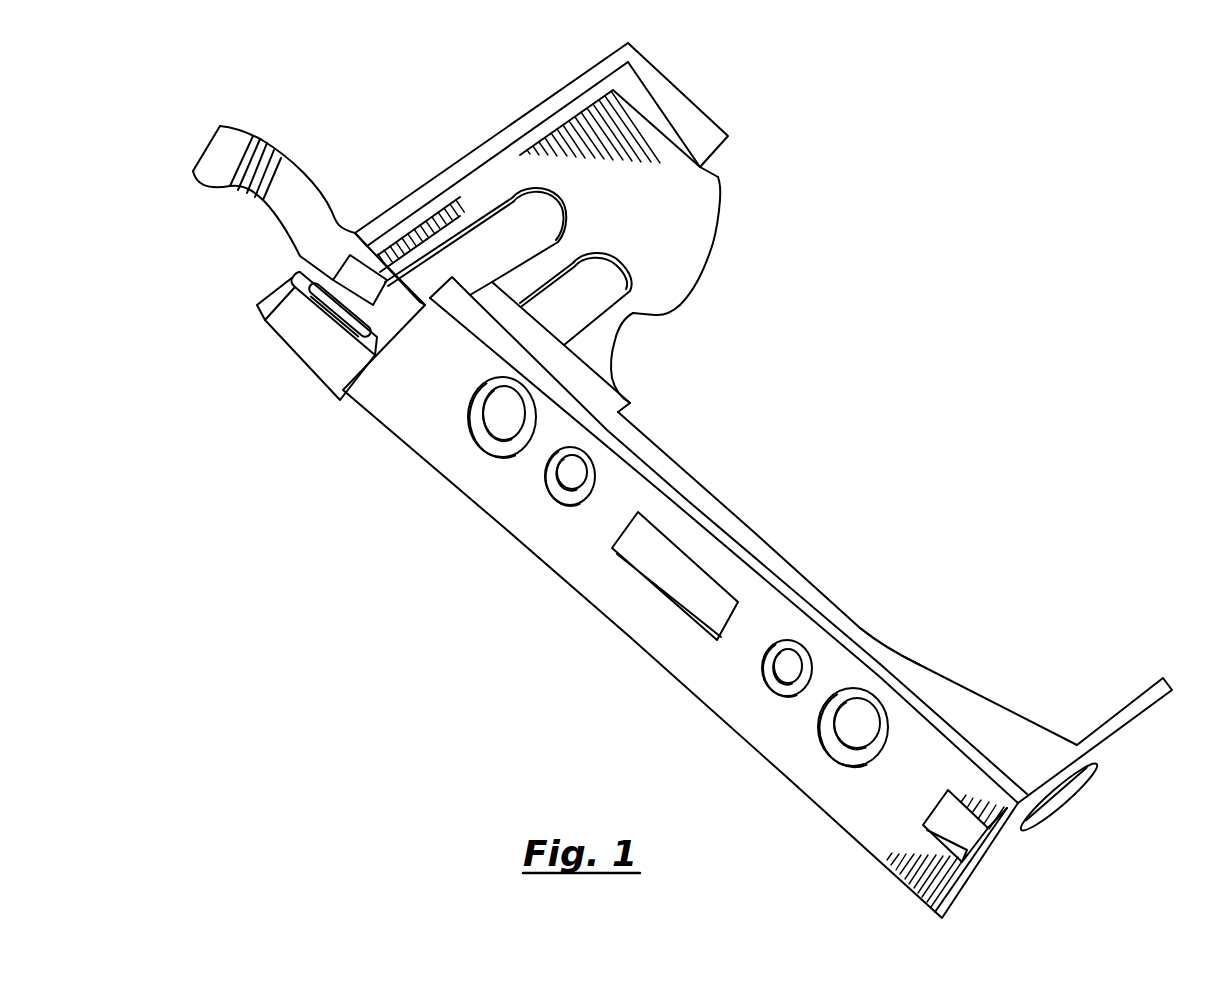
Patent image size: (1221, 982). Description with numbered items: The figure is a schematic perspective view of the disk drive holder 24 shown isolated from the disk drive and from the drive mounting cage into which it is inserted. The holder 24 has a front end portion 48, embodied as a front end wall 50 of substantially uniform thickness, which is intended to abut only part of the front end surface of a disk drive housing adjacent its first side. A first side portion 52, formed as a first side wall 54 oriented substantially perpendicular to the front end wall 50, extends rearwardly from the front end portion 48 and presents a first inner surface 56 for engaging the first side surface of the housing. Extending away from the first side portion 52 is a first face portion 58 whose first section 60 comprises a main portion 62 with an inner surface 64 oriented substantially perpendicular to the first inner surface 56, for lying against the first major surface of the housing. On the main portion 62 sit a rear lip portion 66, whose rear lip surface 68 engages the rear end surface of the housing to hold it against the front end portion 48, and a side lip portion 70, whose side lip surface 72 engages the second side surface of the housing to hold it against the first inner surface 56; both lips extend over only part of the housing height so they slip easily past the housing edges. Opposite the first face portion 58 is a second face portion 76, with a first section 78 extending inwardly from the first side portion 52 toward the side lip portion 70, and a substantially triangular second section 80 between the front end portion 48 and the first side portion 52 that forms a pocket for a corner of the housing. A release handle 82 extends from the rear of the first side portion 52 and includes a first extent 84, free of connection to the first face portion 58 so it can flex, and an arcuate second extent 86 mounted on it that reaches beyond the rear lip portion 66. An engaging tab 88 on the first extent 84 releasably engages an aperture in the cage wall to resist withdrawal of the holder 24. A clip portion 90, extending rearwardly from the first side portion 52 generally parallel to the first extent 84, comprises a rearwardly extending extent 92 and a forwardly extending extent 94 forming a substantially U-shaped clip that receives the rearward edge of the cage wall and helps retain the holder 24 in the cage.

The disk drive holder 24 is at (492, 578).
The front end portion 48 is at (1047, 827).
The front end wall 50 is at (1117, 744).
The first side portion 52 is at (757, 710).
The first side wall 54 is at (673, 638).
The first inner surface 56 is at (755, 535).
The first face portion 58 is at (504, 108).
The first section 60 is at (667, 267).
The main portion 62 is at (633, 313).
The inner surface 64 is at (683, 222).
The rear lip portion 66 is at (572, 92).
The rear lip surface 68 is at (462, 196).
The side lip portion 70 is at (677, 97).
The side lip surface 72 is at (708, 163).
The second face portion 76 is at (652, 403).
The first section 78 is at (587, 381).
The second section 80 is at (1007, 740).
The release handle 82 is at (263, 185).
The first extent 84 is at (338, 247).
The second extent 86 is at (281, 157).
The engaging tab 88 is at (340, 274).
The clip portion 90 is at (330, 365).
The rearwardly extending extent 92 is at (322, 308).
The forwardly extending extent 94 is at (303, 330).